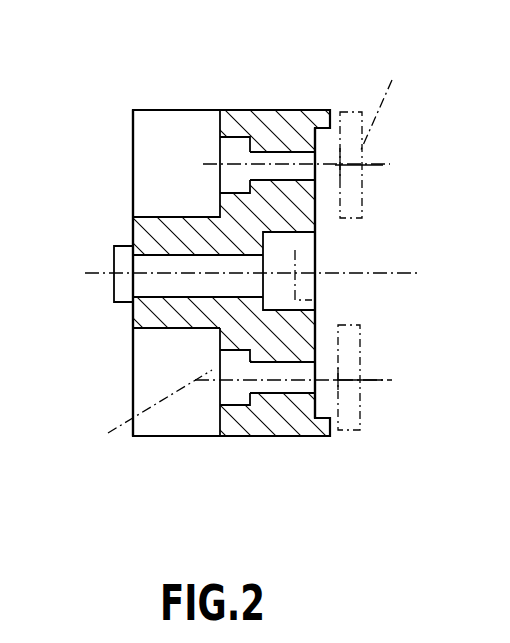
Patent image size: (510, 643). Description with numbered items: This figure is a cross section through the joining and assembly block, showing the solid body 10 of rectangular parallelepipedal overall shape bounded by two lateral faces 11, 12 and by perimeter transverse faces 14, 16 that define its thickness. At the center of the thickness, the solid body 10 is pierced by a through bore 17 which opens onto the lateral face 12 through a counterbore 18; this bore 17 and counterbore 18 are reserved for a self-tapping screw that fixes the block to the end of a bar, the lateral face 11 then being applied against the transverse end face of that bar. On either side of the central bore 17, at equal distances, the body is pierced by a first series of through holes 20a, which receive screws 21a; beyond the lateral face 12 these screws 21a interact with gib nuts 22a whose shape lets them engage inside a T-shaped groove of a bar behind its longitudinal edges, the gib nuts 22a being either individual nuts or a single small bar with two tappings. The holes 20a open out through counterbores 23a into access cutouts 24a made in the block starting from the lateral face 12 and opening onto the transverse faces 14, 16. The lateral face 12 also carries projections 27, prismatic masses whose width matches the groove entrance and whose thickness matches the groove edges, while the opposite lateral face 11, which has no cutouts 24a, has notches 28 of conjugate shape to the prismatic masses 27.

The solid body 10 is at (241, 454).
The lateral face 11 is at (318, 322).
The lateral face 12 is at (133, 390).
The transverse face 14 is at (263, 112).
The transverse face 16 is at (282, 437).
The through bore 17 is at (168, 285).
The counterbore 18 is at (298, 246).
The through holes 20a is at (288, 150).
The screws 21a is at (377, 150).
The gib nuts 22a is at (362, 460).
The counterbores 23a is at (237, 137).
The access cutouts 24a is at (165, 157).
The projections 27 is at (123, 258).
The notches 28 is at (305, 290).